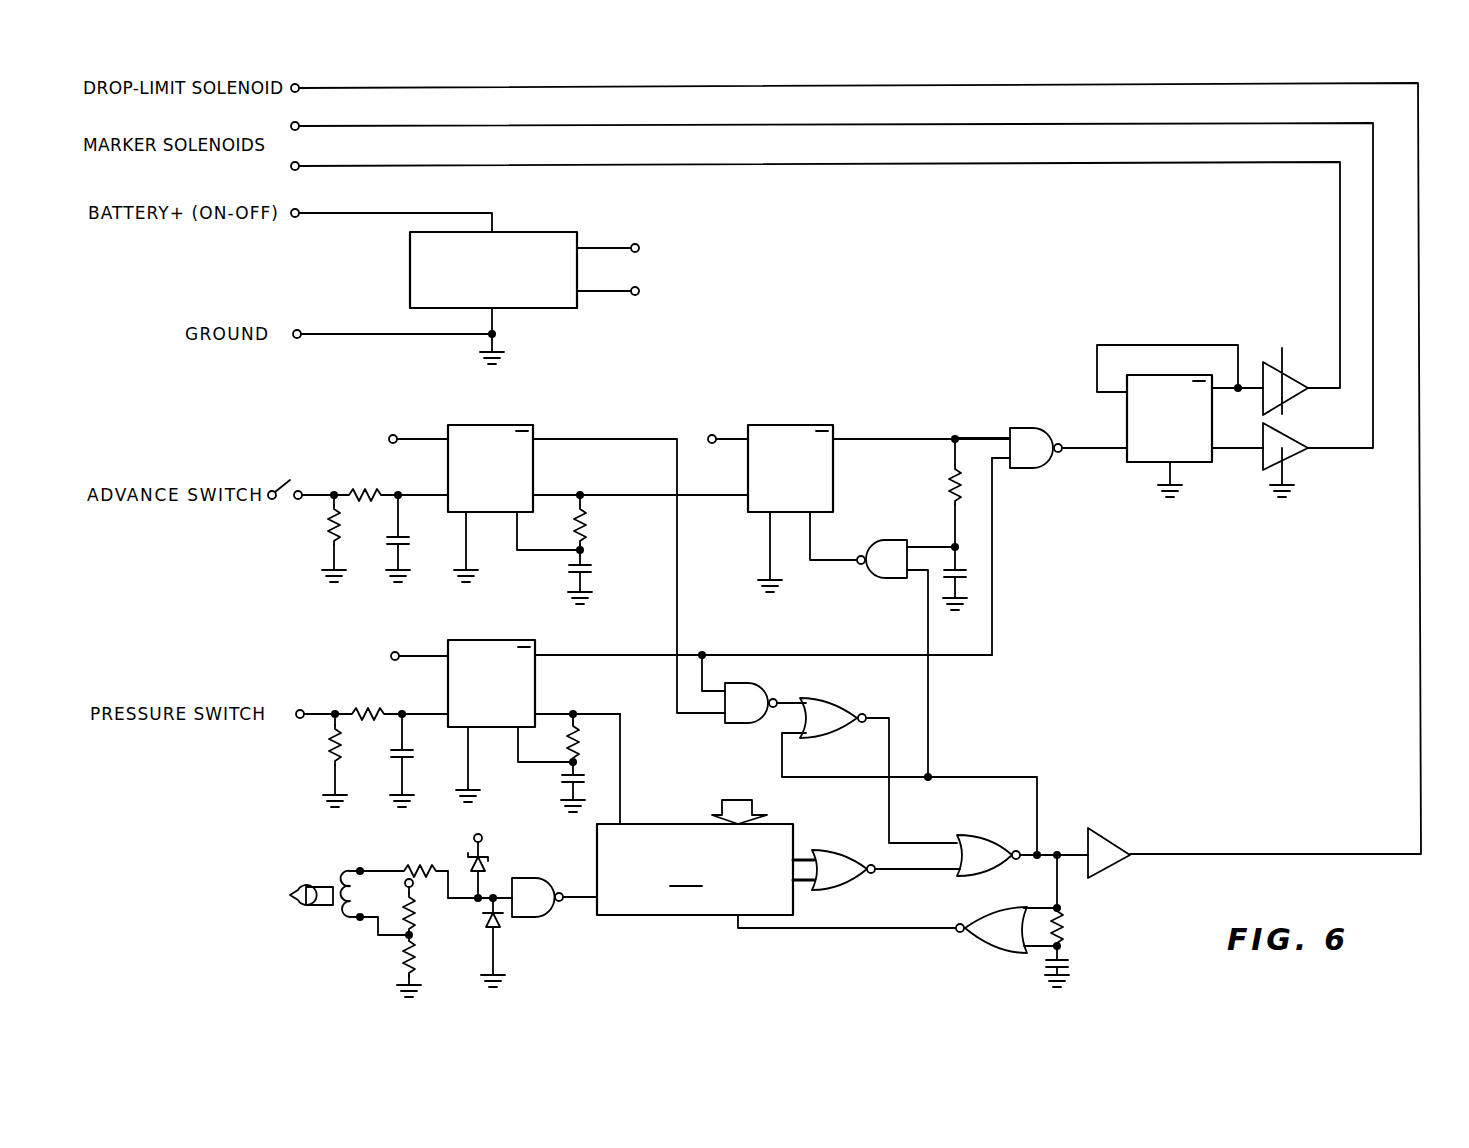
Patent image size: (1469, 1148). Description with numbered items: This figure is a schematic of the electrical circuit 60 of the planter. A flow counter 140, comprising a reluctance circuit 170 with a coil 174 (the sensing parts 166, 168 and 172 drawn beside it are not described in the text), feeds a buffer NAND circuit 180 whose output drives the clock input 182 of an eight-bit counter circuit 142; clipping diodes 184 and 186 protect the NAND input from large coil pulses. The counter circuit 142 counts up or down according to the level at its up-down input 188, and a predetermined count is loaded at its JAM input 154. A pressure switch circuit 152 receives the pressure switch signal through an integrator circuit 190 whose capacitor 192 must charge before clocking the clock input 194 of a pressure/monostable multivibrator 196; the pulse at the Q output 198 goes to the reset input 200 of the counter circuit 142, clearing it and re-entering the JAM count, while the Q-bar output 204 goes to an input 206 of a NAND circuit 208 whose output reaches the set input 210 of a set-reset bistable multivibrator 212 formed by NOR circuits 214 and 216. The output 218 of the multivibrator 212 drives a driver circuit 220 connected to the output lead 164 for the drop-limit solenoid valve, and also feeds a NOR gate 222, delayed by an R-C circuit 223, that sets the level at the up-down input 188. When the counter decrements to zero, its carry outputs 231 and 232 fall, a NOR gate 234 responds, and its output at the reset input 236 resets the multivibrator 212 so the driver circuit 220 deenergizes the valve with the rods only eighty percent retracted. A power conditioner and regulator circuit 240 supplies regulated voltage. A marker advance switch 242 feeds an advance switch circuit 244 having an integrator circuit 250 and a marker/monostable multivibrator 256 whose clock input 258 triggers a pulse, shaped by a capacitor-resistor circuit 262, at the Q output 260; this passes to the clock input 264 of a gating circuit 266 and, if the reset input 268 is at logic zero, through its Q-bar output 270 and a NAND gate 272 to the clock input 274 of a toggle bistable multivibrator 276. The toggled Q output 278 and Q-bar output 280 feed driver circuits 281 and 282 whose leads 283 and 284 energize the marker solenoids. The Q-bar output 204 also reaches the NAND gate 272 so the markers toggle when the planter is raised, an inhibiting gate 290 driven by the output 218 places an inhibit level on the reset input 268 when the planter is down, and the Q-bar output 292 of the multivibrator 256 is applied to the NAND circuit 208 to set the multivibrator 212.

The electrical circuit 60 is at (1422, 652).
The flow counter 140 is at (298, 860).
The counter circuit 142 is at (695, 869).
The pressure switch circuit 152 is at (345, 690).
The JAM input 154 is at (757, 813).
The electrical output lead 164 is at (736, 88).
The sensor housing 166 is at (280, 893).
The magnet 168 is at (290, 906).
The reluctance circuit 170 is at (327, 922).
The reed switch element 172 is at (320, 887).
The coil 174 is at (354, 890).
The buffer NAND circuit 180 is at (537, 884).
The clock input 182 is at (580, 905).
The clipping diode 184 is at (483, 866).
The clipping diode 186 is at (498, 923).
The up-down input 188 is at (741, 930).
The integrator circuit 190 is at (354, 760).
The capacitor 192 is at (410, 748).
The clock input 194 is at (448, 710).
The pressure/monostable multivibrator 196 is at (496, 645).
The Q output 198 is at (542, 712).
The reset input 200 is at (622, 822).
The Q-bar output 204 is at (560, 655).
The input 206 is at (706, 690).
The NAND circuit 208 is at (755, 697).
The set input 210 is at (796, 700).
The set-reset bistable multivibrator 212 is at (876, 777).
The NOR circuit 214 is at (840, 707).
The NOR circuit 216 is at (975, 838).
The output 218 is at (1054, 850).
The driver circuit 220 is at (1105, 860).
The NOR gate 222 is at (990, 940).
The R-C circuit 223 is at (1066, 934).
The carry output 231 is at (795, 857).
The carry output 232 is at (798, 884).
The NOR gate 234 is at (840, 880).
The reset input 236 is at (942, 870).
The power conditioner and regulator circuit 240 is at (543, 302).
The marker advance switch 242 is at (290, 480).
The advance switch circuit 244 is at (394, 425).
The integrator circuit 250 is at (380, 546).
The marker/monostable multivibrator 256 is at (495, 430).
The clock input 258 is at (448, 490).
The Q output 260 is at (553, 492).
The capacitor-resistor circuit 262 is at (591, 537).
The clock input 264 is at (742, 495).
The gating circuit 266 is at (789, 432).
The reset input 268 is at (811, 532).
The Q-bar output 270 is at (860, 439).
The NAND gate 272 is at (1028, 436).
The clock input 274 is at (1113, 450).
The toggle bistable multivibrator 276 is at (1178, 448).
The Q output 278 is at (1243, 452).
The Q-bar output 280 is at (1236, 384).
The driver circuit 281 is at (992, 460).
The driver circuit 282 is at (1286, 382).
The lead 283 is at (797, 126).
The lead 284 is at (840, 166).
The inhibiting gate 290 is at (893, 566).
The Q-bar output 292 is at (575, 439).